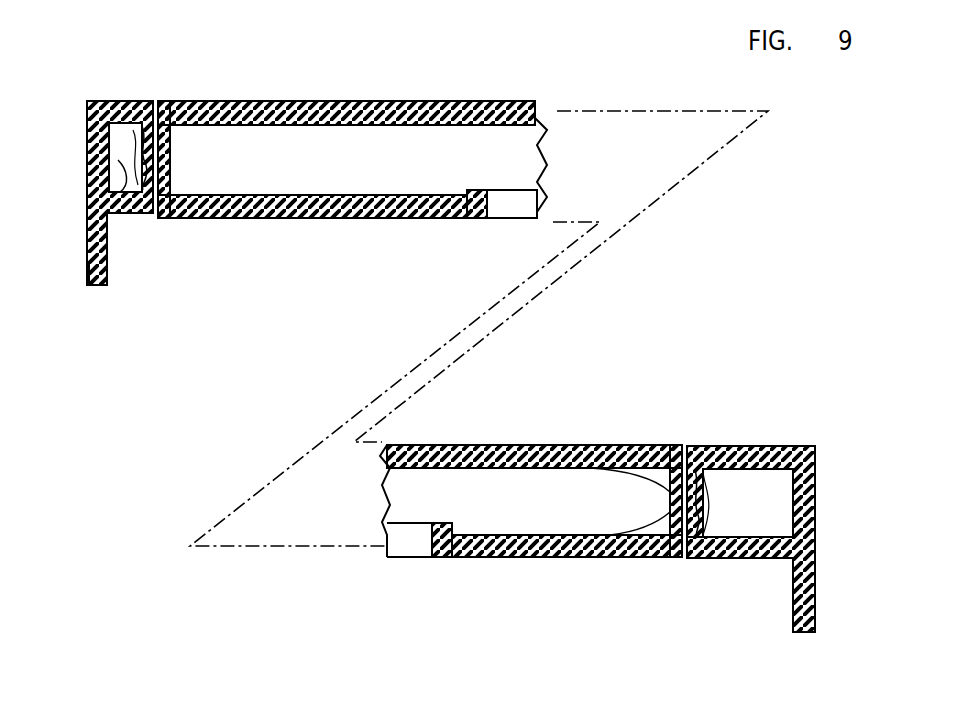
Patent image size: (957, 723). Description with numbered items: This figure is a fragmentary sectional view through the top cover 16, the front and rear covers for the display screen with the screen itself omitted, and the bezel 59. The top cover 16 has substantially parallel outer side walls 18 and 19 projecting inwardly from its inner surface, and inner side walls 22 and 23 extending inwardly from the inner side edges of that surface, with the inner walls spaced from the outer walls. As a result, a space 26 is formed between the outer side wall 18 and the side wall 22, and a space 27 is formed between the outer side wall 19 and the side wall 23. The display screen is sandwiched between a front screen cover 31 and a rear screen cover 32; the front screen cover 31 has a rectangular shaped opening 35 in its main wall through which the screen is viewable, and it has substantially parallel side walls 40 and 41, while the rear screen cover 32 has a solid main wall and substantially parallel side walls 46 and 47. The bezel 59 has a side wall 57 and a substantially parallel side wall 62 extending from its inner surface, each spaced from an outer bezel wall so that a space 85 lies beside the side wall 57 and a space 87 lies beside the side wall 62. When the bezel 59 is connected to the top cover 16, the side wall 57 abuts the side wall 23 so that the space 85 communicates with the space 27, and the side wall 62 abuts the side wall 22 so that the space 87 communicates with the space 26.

The top cover 16 is at (115, 95).
The outer side wall 18 is at (815, 590).
The outer side wall 19 is at (87, 262).
The side wall 22 is at (745, 446).
The side wall 23 is at (200, 101).
The space 26 is at (757, 446).
The space 27 is at (133, 101).
The front screen cover 31 is at (419, 225).
The rear screen cover 32 is at (421, 96).
The rectangular shaped opening 35 is at (490, 204).
The side wall 40 is at (172, 170).
The side wall 41 is at (627, 533).
The side wall 46 is at (172, 148).
The side wall 47 is at (650, 482).
The side wall 57 is at (118, 213).
The bezel 59 is at (134, 214).
The side wall 62 is at (700, 526).
The space 85 is at (140, 224).
The space 87 is at (692, 560).